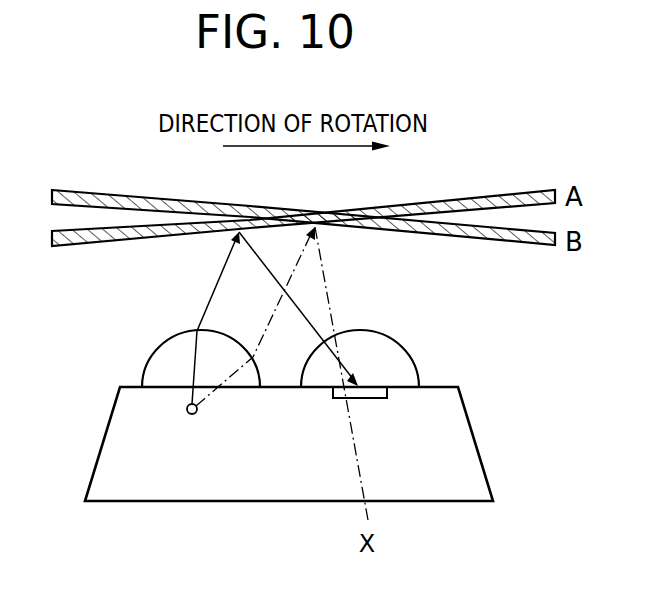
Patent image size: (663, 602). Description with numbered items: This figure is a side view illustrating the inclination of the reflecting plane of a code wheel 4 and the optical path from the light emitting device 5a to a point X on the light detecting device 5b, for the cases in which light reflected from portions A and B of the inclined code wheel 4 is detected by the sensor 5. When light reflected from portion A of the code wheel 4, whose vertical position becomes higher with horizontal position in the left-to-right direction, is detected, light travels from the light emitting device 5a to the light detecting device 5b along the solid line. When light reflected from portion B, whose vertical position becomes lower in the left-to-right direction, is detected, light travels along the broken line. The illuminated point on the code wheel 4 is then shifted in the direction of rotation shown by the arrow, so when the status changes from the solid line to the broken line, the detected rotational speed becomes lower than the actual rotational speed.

The code wheel 4 is at (457, 204).
The sensor 5 is at (478, 450).
The light emitting device 5a is at (186, 407).
The light detecting device 5b is at (375, 388).